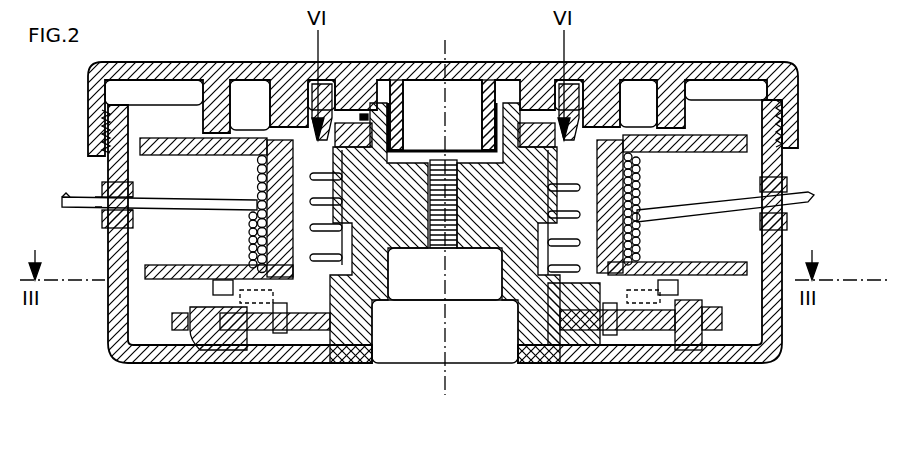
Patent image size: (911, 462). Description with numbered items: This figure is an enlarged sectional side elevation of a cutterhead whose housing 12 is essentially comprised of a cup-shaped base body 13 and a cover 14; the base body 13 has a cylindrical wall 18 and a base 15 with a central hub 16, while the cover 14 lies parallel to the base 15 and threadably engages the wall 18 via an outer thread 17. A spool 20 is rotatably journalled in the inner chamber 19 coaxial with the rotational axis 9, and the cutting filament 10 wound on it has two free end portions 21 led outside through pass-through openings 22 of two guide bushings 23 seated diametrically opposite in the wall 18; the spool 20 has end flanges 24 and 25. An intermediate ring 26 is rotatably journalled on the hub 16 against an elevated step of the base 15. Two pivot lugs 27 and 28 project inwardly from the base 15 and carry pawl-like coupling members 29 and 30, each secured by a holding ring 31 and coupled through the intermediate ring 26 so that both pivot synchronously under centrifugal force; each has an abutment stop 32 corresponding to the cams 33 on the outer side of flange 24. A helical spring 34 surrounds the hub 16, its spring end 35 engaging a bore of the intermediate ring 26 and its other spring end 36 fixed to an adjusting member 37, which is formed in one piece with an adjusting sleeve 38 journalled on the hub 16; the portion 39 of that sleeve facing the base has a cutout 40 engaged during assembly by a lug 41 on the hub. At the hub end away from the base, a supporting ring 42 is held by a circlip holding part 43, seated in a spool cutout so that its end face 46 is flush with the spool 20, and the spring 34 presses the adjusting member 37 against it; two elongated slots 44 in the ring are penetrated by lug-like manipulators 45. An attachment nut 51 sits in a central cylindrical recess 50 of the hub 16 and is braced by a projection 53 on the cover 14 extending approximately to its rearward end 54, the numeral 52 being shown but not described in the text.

The rotational axis 9 is at (445, 383).
The cutting filament 10 is at (228, 200).
The housing 12 is at (702, 405).
The base body 13 is at (354, 370).
The cover 14 is at (240, 74).
The base 15 is at (293, 352).
The central hub 16 is at (445, 331).
The outer thread 17 is at (96, 125).
The cylindrical wall 18 is at (110, 290).
The inner chamber 19 is at (725, 218).
The spool 20 is at (778, 355).
The free end portions 21 is at (100, 210).
The pass-through openings 22 is at (133, 218).
The guide bushings 23 is at (103, 240).
The end flange 24 is at (158, 280).
The end flange 25 is at (170, 140).
The intermediate ring 26 is at (330, 352).
The pivot lug 27 is at (690, 352).
The pivot lug 28 is at (207, 352).
The coupling member 29 is at (645, 352).
The coupling member 30 is at (226, 352).
The holding ring 31 is at (178, 308).
The abutment stop 32 is at (273, 296).
The cams 33 is at (248, 282).
The helical spring 34 is at (536, 352).
The spring end 35 is at (583, 352).
The spring end 36 is at (276, 135).
The adjusting member 37 is at (630, 132).
The adjusting sleeve 38 is at (637, 176).
The portion 39 is at (636, 236).
The cutout 40 is at (372, 248).
The lug 41 is at (392, 323).
The supporting ring 42 is at (508, 128).
The holding part 43 is at (363, 113).
The elongated slots 44 is at (306, 110).
The manipulators 45 is at (313, 96).
The end face 46 is at (605, 125).
The central cylindrical recess 50 is at (400, 100).
The attachment nut 51 is at (462, 248).
The stop 52 is at (450, 250).
The projection 53 is at (467, 127).
The rearward end 54 is at (432, 165).